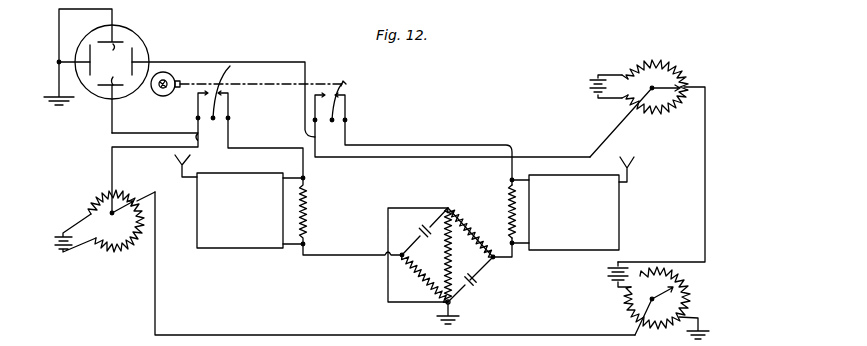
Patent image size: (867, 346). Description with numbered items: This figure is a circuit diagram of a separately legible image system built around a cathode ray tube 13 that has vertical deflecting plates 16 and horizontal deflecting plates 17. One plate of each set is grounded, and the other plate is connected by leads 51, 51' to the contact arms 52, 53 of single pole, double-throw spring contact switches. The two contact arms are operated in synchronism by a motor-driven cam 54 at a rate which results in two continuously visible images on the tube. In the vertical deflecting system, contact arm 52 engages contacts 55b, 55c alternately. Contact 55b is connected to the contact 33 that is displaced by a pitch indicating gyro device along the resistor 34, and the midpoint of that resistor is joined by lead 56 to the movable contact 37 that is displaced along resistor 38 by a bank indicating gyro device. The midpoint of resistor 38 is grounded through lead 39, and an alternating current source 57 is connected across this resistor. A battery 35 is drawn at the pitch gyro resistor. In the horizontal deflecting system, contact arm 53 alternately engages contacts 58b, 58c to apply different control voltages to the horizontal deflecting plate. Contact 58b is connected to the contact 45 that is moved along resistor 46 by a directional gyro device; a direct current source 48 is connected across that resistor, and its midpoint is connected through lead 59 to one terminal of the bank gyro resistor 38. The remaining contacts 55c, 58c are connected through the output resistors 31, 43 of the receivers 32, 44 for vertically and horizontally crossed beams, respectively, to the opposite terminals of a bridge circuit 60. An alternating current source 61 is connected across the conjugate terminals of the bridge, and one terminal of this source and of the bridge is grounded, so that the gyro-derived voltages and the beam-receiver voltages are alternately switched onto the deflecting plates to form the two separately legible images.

The cathode ray tube 13 is at (143, 29).
The vertical deflecting plates 16 is at (112, 64).
The horizontal deflecting plates 17 is at (91, 44).
The output resistor 31 is at (307, 220).
The receiver for vertically crossed beams 32 is at (256, 178).
The contact 33 is at (117, 220).
The resistor 34 is at (104, 253).
The battery 35 is at (63, 233).
The movable contact 37 is at (658, 300).
The resistor 38 is at (684, 300).
The lead 39 is at (696, 323).
The output resistor 43 is at (509, 208).
The receiver for horizontally crossed beams 44 is at (619, 214).
The contact 45 is at (659, 89).
The resistor 46 is at (686, 73).
The direct current source 48 is at (589, 92).
The lead 51 is at (155, 127).
The lead 51' is at (223, 90).
The contact arm 52 is at (231, 68).
The contact arm 53 is at (345, 83).
The motor-driven cam 54 is at (180, 82).
The contact 55b is at (160, 152).
The contact 55c is at (232, 106).
The lead 56 is at (355, 331).
The alternating current source 57 is at (607, 276).
The contact 58b is at (313, 122).
The contact 58c is at (346, 112).
The lead 59 is at (705, 189).
The bridge circuit 60 is at (478, 272).
The alternating current source 61 is at (437, 201).